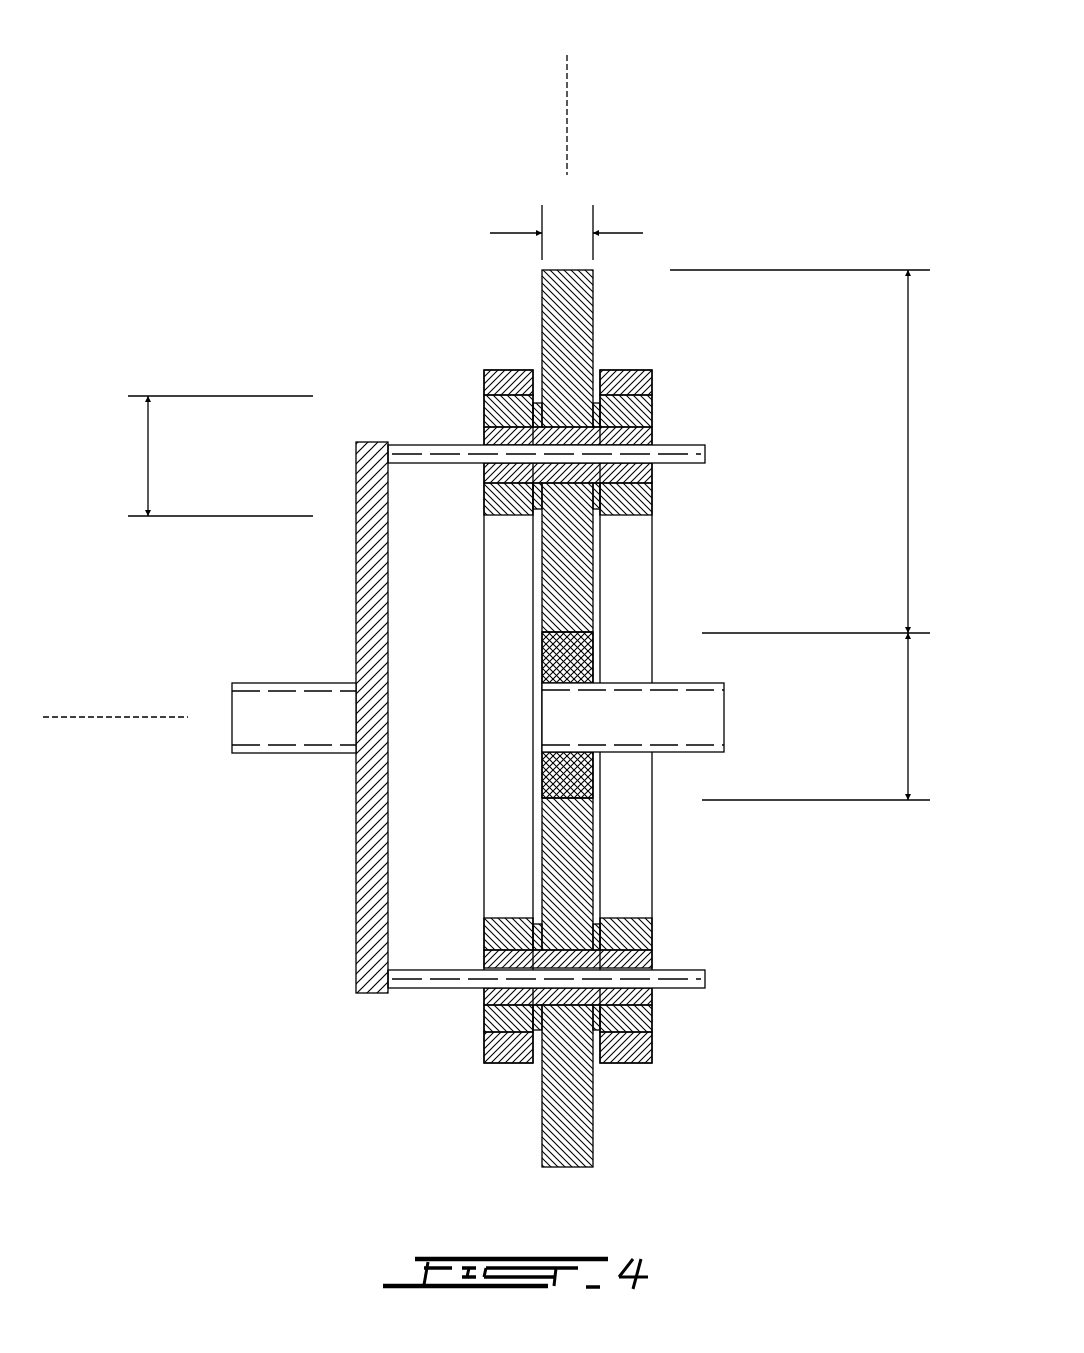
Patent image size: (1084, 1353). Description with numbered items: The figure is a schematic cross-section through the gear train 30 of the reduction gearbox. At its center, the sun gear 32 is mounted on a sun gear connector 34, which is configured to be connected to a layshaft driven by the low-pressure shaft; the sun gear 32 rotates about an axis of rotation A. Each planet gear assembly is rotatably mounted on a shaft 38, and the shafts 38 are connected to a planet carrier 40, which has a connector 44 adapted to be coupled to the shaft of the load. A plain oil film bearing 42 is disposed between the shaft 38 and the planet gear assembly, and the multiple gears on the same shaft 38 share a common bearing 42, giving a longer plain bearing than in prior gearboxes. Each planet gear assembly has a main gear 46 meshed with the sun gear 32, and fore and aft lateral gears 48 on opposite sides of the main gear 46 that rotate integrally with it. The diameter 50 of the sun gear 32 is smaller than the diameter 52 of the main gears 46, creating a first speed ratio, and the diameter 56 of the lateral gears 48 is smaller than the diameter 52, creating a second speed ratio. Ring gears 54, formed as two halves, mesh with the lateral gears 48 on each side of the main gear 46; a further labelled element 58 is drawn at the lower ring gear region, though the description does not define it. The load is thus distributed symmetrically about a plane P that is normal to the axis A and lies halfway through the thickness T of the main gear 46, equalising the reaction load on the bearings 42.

The gear train 30 is at (866, 128).
The sun gear 32 is at (594, 777).
The sun gear connector 34 is at (724, 717).
The shaft 38 is at (707, 978).
The planet carrier 40 is at (372, 442).
The bearing 42 is at (705, 443).
The connector 44 is at (262, 754).
The main gear 46 is at (575, 1150).
The fore and aft lateral gears 48 is at (655, 415).
The diameter of the sun gear 50 is at (826, 716).
The diameter of the main gears 52 is at (810, 451).
The ring gears 54 is at (640, 368).
The diameter of the lateral gears 56 is at (210, 456).
The bearing race 58 is at (630, 1065).
The axis of rotation A is at (117, 718).
The plane P is at (567, 105).
The thickness T is at (556, 232).